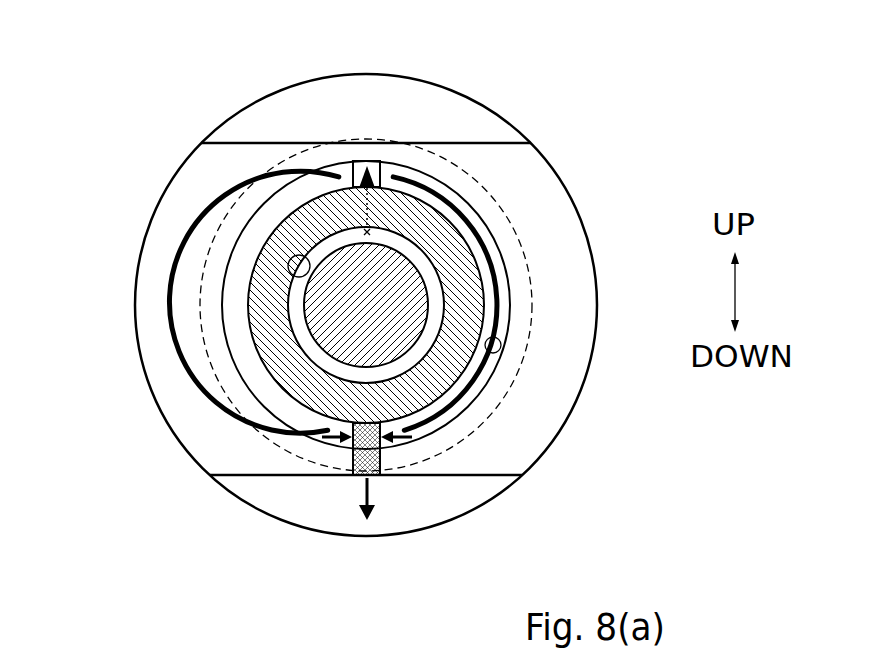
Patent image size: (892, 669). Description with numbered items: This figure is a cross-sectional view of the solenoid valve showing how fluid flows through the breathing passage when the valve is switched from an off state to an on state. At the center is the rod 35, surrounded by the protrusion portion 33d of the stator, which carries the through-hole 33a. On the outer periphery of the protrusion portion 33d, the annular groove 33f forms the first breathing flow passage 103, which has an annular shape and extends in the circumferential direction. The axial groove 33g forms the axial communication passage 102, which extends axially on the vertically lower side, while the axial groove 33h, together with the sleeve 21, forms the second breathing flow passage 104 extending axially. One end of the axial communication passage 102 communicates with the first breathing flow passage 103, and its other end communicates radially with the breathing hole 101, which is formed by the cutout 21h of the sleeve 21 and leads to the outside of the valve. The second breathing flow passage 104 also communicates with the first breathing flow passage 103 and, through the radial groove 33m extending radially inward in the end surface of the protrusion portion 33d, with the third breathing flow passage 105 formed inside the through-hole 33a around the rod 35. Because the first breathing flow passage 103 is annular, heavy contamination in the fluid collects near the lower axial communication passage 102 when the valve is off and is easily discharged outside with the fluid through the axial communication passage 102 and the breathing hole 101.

The sleeve 21 is at (165, 162).
The cutout 21h is at (358, 474).
The through-hole 33a is at (266, 218).
The protrusion portion 33d is at (447, 233).
The annular groove 33f is at (499, 353).
The axial groove 33g is at (382, 458).
The axial groove 33h is at (362, 168).
The radial groove 33m is at (392, 175).
The rod 35 is at (400, 300).
The breathing hole 101 is at (375, 477).
The axial communication passage 102 is at (352, 474).
The first breathing flow passage 103 is at (480, 387).
The second breathing flow passage 104 is at (380, 162).
The third breathing flow passage 105 is at (293, 256).